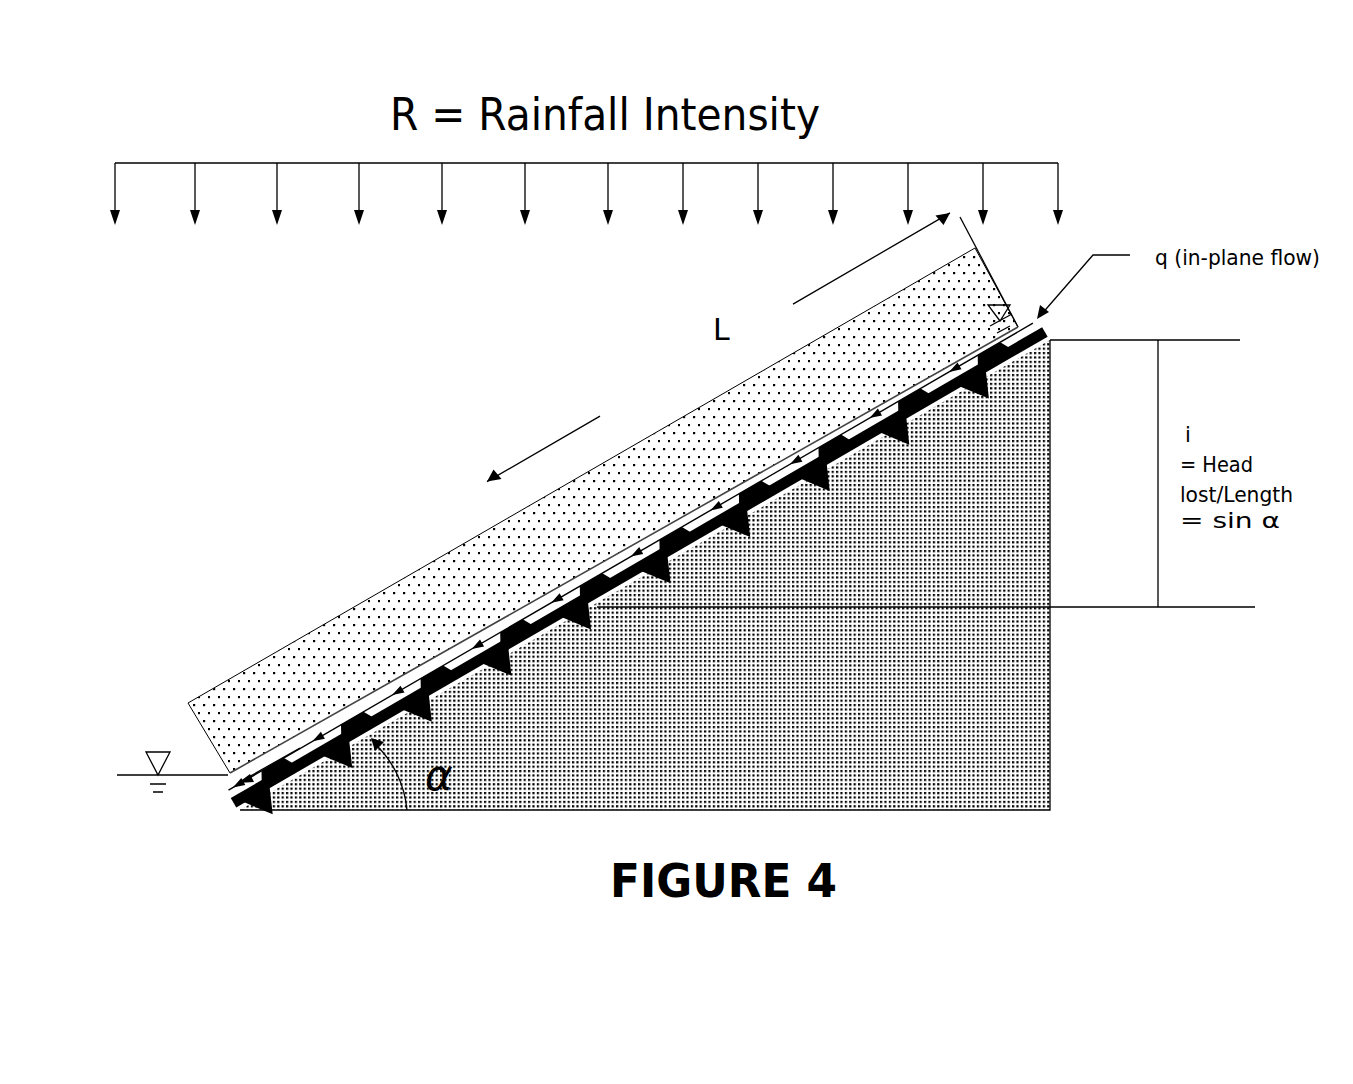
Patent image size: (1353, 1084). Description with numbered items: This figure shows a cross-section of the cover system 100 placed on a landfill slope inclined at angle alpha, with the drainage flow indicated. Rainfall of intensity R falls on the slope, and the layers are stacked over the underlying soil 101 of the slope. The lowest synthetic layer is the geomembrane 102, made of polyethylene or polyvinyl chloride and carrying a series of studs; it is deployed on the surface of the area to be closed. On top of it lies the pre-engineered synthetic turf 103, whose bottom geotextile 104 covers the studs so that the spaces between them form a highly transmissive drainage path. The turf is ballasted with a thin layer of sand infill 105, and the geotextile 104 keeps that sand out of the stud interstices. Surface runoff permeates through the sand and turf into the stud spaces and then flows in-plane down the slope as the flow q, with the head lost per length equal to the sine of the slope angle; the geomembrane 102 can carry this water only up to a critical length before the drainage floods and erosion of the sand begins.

The cover system 100 is at (236, 791).
The intermediate soil cover 101 is at (752, 575).
The geomembrane 102 is at (543, 636).
The synthetic turf 103 is at (365, 602).
The bottom geotextile 104 is at (497, 612).
The sand infill 105 is at (540, 587).